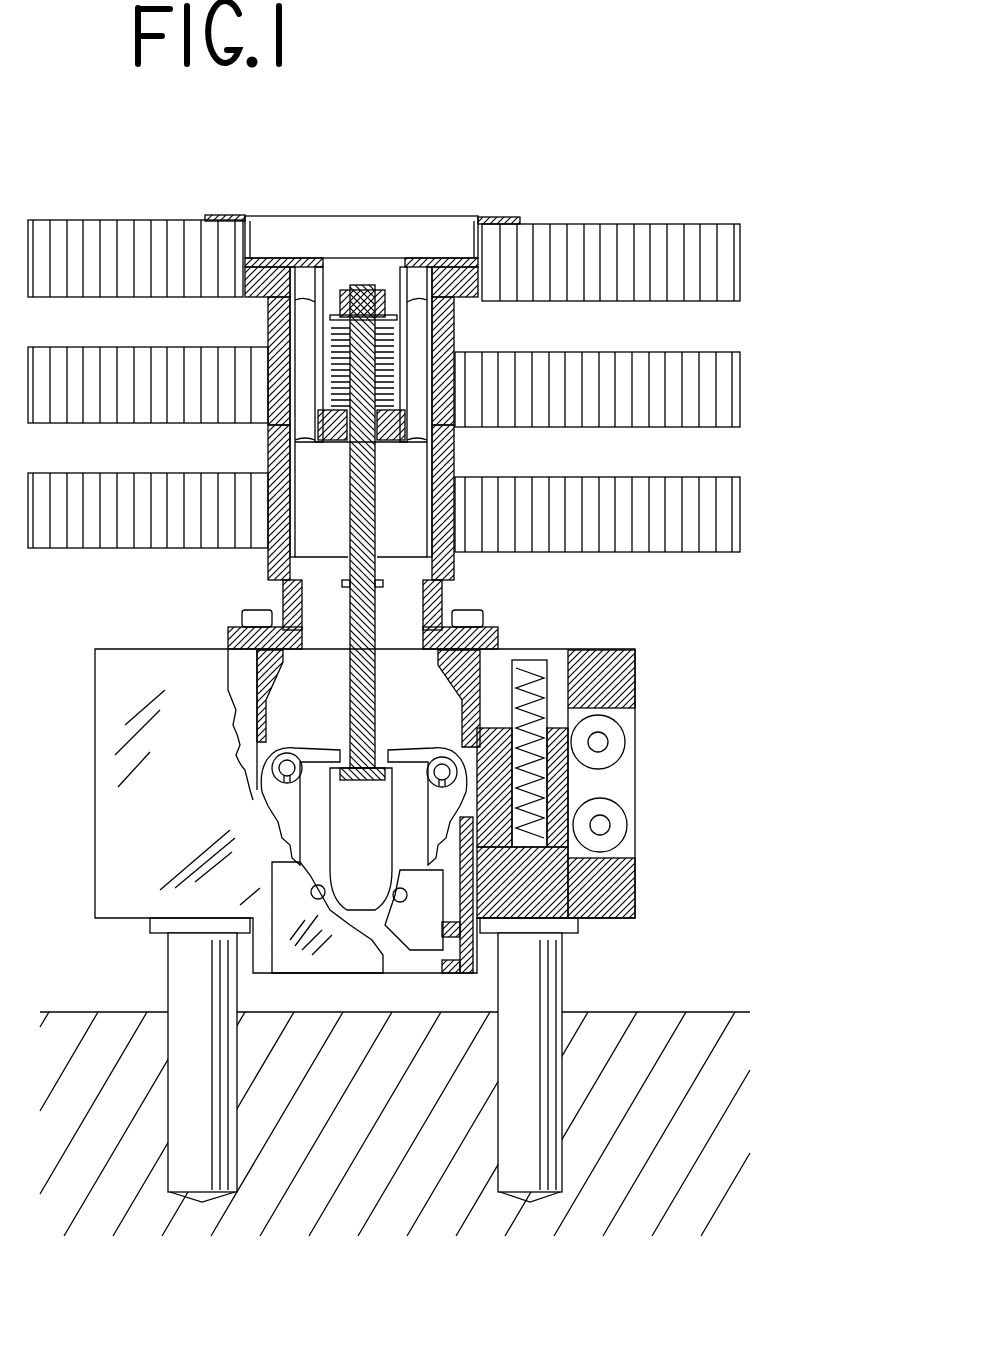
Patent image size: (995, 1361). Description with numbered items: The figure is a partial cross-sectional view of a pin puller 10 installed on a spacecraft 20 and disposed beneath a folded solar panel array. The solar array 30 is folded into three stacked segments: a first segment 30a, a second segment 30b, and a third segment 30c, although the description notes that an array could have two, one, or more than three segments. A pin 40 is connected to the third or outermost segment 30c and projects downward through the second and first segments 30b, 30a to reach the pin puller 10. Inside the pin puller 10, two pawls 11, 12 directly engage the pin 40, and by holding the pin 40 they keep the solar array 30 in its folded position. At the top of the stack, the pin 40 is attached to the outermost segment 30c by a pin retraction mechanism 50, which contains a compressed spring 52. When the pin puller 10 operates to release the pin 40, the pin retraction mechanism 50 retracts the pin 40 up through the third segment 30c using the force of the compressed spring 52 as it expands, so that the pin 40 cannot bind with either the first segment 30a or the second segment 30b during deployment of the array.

The pin puller 10 is at (451, 897).
The pawl 11 is at (325, 750).
The pawl 12 is at (410, 743).
The spacecraft 20 is at (688, 1010).
The solar array 30 is at (450, 348).
The first segment 30a is at (724, 221).
The second segment 30b is at (724, 347).
The third segment 30c is at (724, 470).
The pin 40 is at (457, 451).
The pin retraction mechanism 50 is at (386, 277).
The compressed spring 52 is at (457, 335).